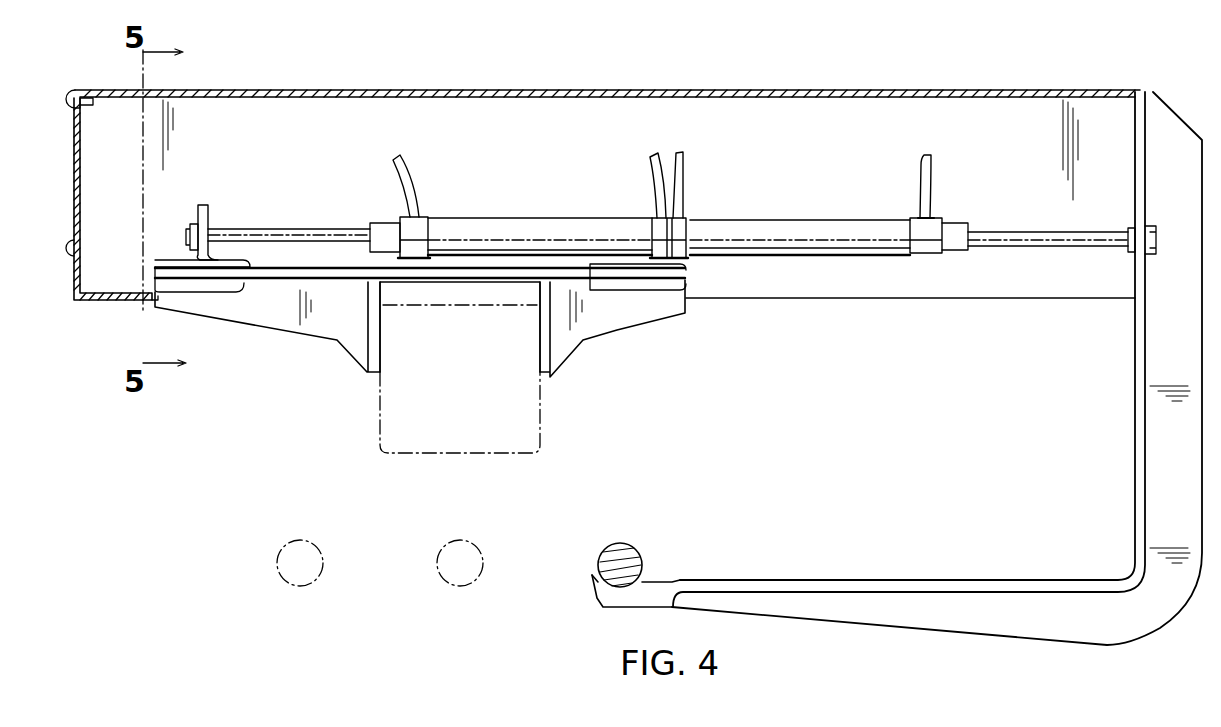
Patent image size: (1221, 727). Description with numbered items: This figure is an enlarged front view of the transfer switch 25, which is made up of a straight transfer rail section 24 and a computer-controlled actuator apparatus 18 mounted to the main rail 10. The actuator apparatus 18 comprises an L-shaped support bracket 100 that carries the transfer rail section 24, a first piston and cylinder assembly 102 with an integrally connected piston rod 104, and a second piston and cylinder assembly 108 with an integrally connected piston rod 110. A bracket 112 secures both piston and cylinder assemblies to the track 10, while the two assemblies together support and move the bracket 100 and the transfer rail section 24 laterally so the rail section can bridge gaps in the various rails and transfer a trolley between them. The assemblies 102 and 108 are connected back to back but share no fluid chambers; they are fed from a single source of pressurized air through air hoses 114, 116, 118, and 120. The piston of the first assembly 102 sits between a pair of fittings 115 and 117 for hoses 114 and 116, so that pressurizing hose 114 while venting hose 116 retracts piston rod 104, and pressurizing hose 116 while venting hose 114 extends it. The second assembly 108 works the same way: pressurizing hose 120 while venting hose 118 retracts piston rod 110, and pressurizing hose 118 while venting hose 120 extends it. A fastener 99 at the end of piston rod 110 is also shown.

The main rail 10 is at (540, 390).
The actuator apparatus 18 is at (756, 65).
The transfer rail section 24 is at (632, 552).
The switch 25 is at (907, 66).
The nut 99 is at (1150, 236).
The L-shaped support bracket 100 is at (1130, 500).
The first piston and cylinder assembly 102 is at (515, 228).
The piston rod 104 is at (272, 234).
The second piston and cylinder assembly 108 is at (783, 232).
The piston rod 110 is at (1003, 236).
The bracket 112 is at (208, 214).
The air hose 114 is at (410, 168).
The fitting 115 is at (428, 216).
The air hose 116 is at (650, 160).
The fitting 117 is at (656, 216).
The air hose 118 is at (684, 185).
The air hose 120 is at (926, 190).